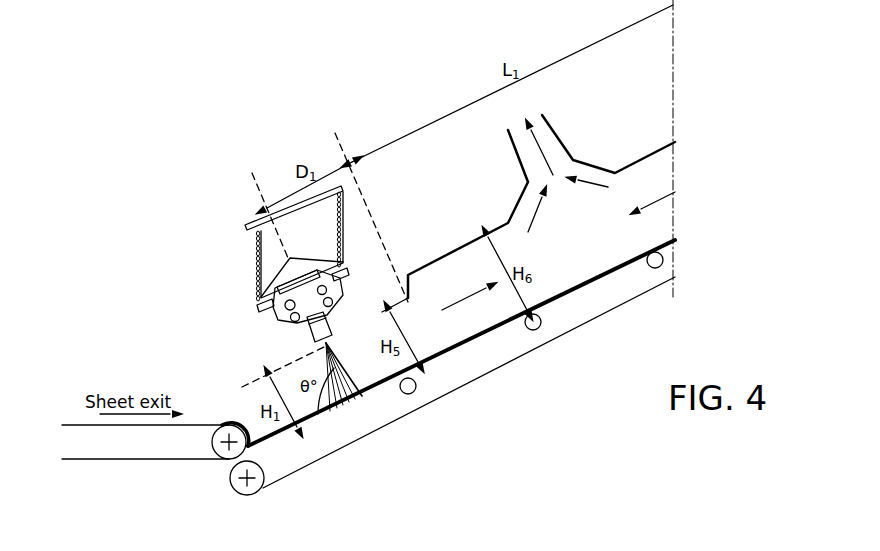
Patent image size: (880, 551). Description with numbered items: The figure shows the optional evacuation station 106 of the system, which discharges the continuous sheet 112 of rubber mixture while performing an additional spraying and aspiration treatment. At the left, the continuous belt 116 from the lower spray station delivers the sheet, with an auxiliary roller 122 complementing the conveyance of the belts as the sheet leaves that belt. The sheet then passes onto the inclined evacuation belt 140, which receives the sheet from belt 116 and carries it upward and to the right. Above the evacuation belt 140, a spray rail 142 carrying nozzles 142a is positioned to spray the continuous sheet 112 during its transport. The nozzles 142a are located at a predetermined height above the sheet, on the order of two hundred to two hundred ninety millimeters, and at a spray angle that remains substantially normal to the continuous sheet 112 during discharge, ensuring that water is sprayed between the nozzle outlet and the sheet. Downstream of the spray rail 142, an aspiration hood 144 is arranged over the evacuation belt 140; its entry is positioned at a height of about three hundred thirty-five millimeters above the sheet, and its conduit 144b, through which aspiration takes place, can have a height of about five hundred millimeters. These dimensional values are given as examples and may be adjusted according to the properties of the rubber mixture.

The evacuation station 106 is at (210, 202).
The continuous sheet 112 is at (263, 457).
The continuous belt 116 is at (93, 426).
The auxiliary roller 122 is at (224, 427).
The evacuation belt 140 is at (508, 364).
The spray rail 142 is at (257, 260).
The nozzles 142a is at (307, 335).
The aspiration hood 144 is at (455, 267).
The conduit 144b is at (655, 178).